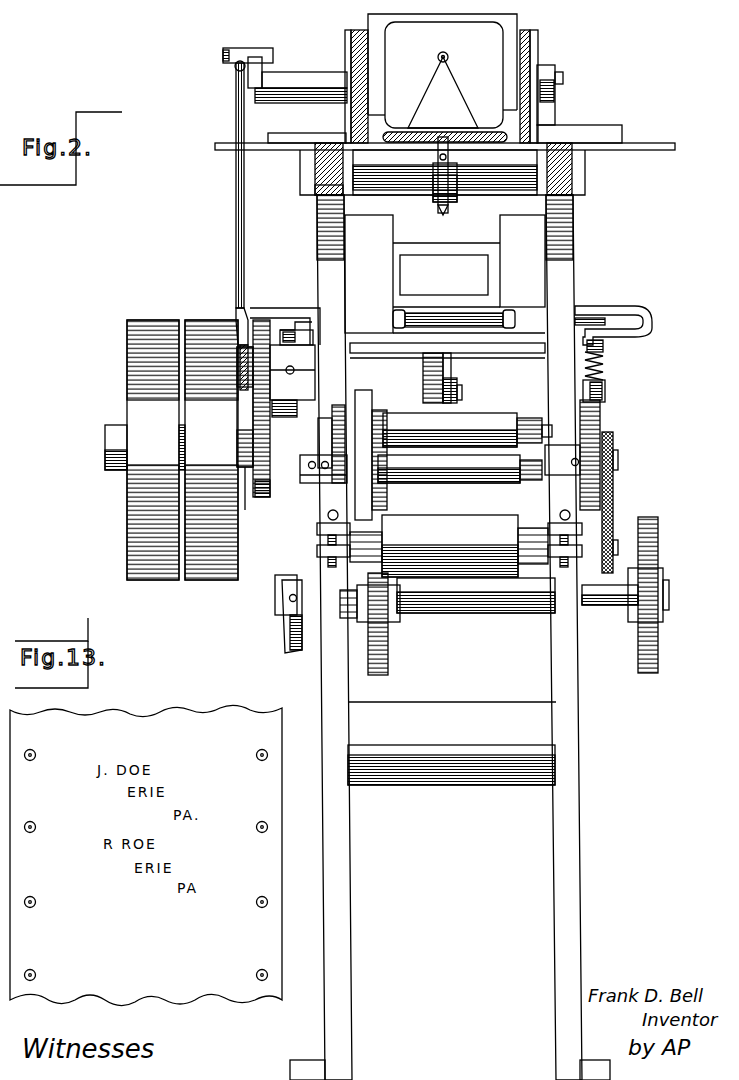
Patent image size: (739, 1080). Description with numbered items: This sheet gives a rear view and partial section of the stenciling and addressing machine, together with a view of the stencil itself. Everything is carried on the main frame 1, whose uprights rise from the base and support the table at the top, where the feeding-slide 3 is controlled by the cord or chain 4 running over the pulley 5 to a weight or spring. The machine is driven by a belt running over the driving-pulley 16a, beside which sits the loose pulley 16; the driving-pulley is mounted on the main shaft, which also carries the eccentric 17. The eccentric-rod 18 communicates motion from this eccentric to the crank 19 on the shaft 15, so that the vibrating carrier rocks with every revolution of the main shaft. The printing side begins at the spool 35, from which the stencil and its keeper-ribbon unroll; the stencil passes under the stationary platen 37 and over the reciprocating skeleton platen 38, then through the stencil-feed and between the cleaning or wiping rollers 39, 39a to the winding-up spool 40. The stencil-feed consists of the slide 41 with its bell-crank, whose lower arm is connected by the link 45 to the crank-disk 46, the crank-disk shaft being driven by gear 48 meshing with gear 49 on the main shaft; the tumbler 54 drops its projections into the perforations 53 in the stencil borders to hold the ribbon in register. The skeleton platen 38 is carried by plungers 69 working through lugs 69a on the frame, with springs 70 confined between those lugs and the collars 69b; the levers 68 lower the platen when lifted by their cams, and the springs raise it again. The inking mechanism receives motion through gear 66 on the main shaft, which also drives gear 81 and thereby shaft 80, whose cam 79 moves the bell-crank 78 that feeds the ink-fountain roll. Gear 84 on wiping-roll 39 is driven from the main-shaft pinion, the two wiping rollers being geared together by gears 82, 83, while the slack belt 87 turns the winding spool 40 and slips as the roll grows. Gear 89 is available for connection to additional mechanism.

In FIG. 2, the main frame 1 is at (317, 233).
In FIG. 2, the feeding-slide 3 is at (442, 78).
In FIG. 2, the cord or chain 4 is at (452, 210).
In FIG. 2, the pulley 5 is at (457, 168).
In FIG. 2, the shaft 15 is at (252, 90).
In FIG. 2, the loose pulley 16 is at (150, 580).
In FIG. 2, the driving-pulley 16a is at (202, 580).
In FIG. 2, the eccentric 17 is at (253, 500).
In FIG. 2, the eccentric-rod 18 is at (237, 226).
In FIG. 2, the crank 19 is at (258, 52).
In FIG. 2, the spool 35 is at (452, 755).
In FIG. 2, the stationary platen 37 is at (273, 303).
In FIG. 2, the reciprocating skeleton platen 38 is at (292, 322).
In FIG. 2, the wiping roller 39 is at (465, 480).
In FIG. 2, the wiping roller 39a is at (505, 403).
In FIG. 2, the winding-up spool 40 is at (482, 560).
In FIG. 2, the slide 41 is at (514, 354).
In FIG. 2, the link 45 is at (444, 372).
In FIG. 2, the crank-disk 46 is at (428, 399).
In FIG. 2, the gear 48 is at (272, 408).
In FIG. 2, the gear 49 is at (272, 492).
In FIG. 13, the perforations 53 is at (30, 761).
In FIG. 2, the tumbler 54 is at (393, 313).
In FIG. 2, the gear 66 is at (388, 497).
In FIG. 2, the levers 68 is at (296, 420).
In FIG. 2, the plungers 69 is at (606, 374).
In FIG. 2, the lugs 69a is at (606, 393).
In FIG. 2, the collars 69b is at (604, 350).
In FIG. 2, the springs 70 is at (606, 366).
In FIG. 2, the bell-crank 78 is at (317, 535).
In FIG. 2, the cam 79 is at (285, 640).
In FIG. 2, the shaft 80 is at (434, 606).
In FIG. 2, the gear 81 is at (388, 660).
In FIG. 2, the gear 82 is at (338, 408).
In FIG. 2, the gear 83 is at (323, 477).
In FIG. 2, the gear 84 is at (602, 423).
In FIG. 2, the belt 87 is at (614, 497).
In FIG. 2, the gear 89 is at (658, 652).